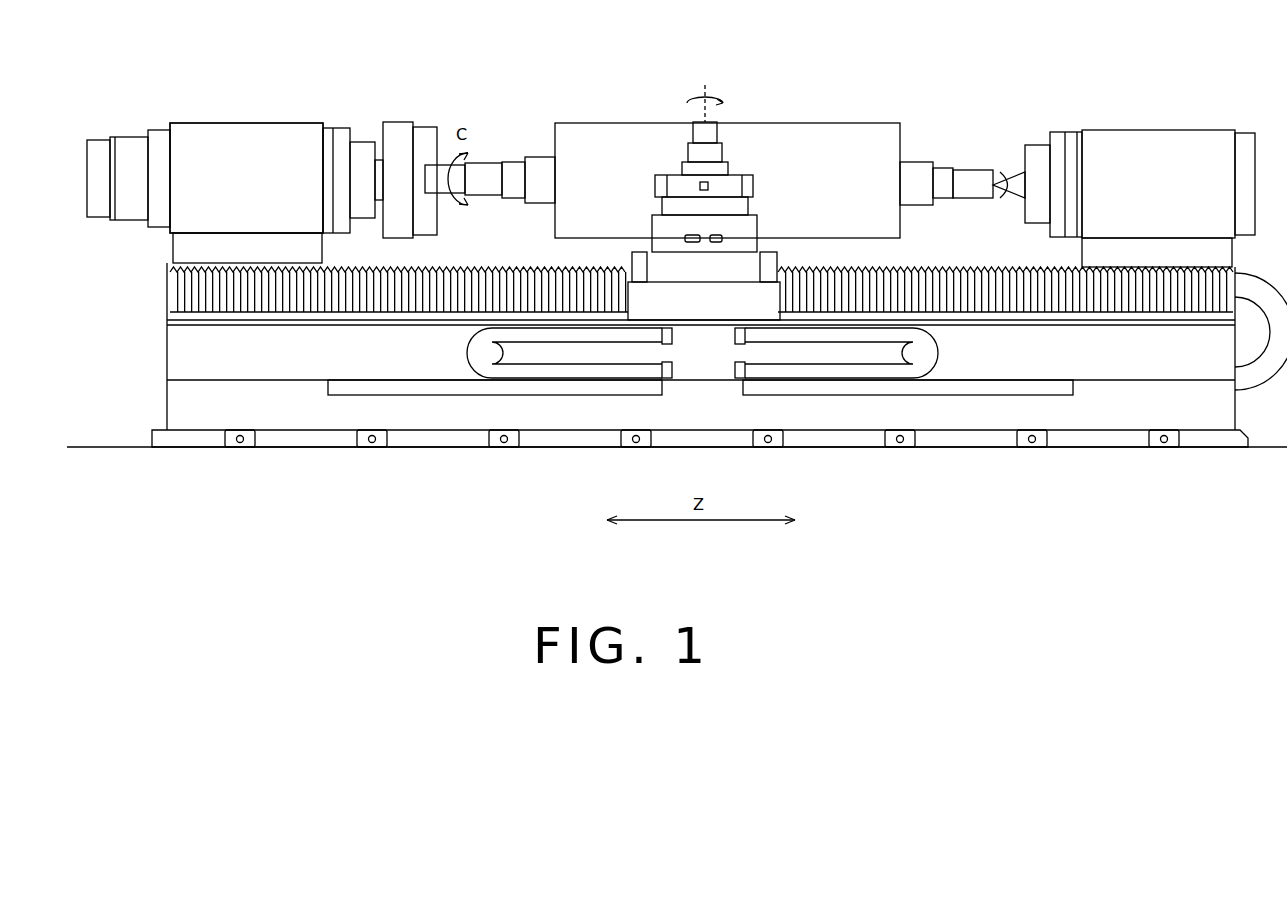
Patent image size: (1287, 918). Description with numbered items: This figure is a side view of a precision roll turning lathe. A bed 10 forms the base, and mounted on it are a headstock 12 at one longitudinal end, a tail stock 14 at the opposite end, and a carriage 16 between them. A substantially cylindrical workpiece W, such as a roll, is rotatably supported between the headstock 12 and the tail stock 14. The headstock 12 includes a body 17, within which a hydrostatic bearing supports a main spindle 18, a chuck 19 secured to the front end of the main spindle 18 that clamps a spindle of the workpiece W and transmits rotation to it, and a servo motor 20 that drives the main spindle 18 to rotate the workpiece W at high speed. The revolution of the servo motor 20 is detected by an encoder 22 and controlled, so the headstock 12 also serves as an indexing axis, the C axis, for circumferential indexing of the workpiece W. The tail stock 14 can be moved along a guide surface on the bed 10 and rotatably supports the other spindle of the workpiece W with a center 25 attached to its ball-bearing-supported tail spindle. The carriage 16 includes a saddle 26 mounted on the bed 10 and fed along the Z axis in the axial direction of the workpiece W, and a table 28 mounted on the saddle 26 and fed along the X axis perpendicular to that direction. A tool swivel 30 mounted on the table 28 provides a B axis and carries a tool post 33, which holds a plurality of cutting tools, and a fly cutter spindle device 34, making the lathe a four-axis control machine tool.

The bed 10 is at (185, 352).
The headstock 12 is at (232, 107).
The tail stock 14 is at (1152, 116).
The carriage 16 is at (729, 180).
The body 17 is at (195, 153).
The main spindle 18 is at (362, 142).
The chuck 19 is at (403, 134).
The servo motor 20 is at (134, 228).
The encoder 22 is at (95, 136).
The center 25 is at (996, 176).
The saddle 26 is at (712, 308).
The table 28 is at (742, 234).
The tool swivel 30 is at (668, 208).
The tool post 33 is at (675, 175).
The fly cutter spindle device 34 is at (731, 141).
The workpiece W is at (810, 142).